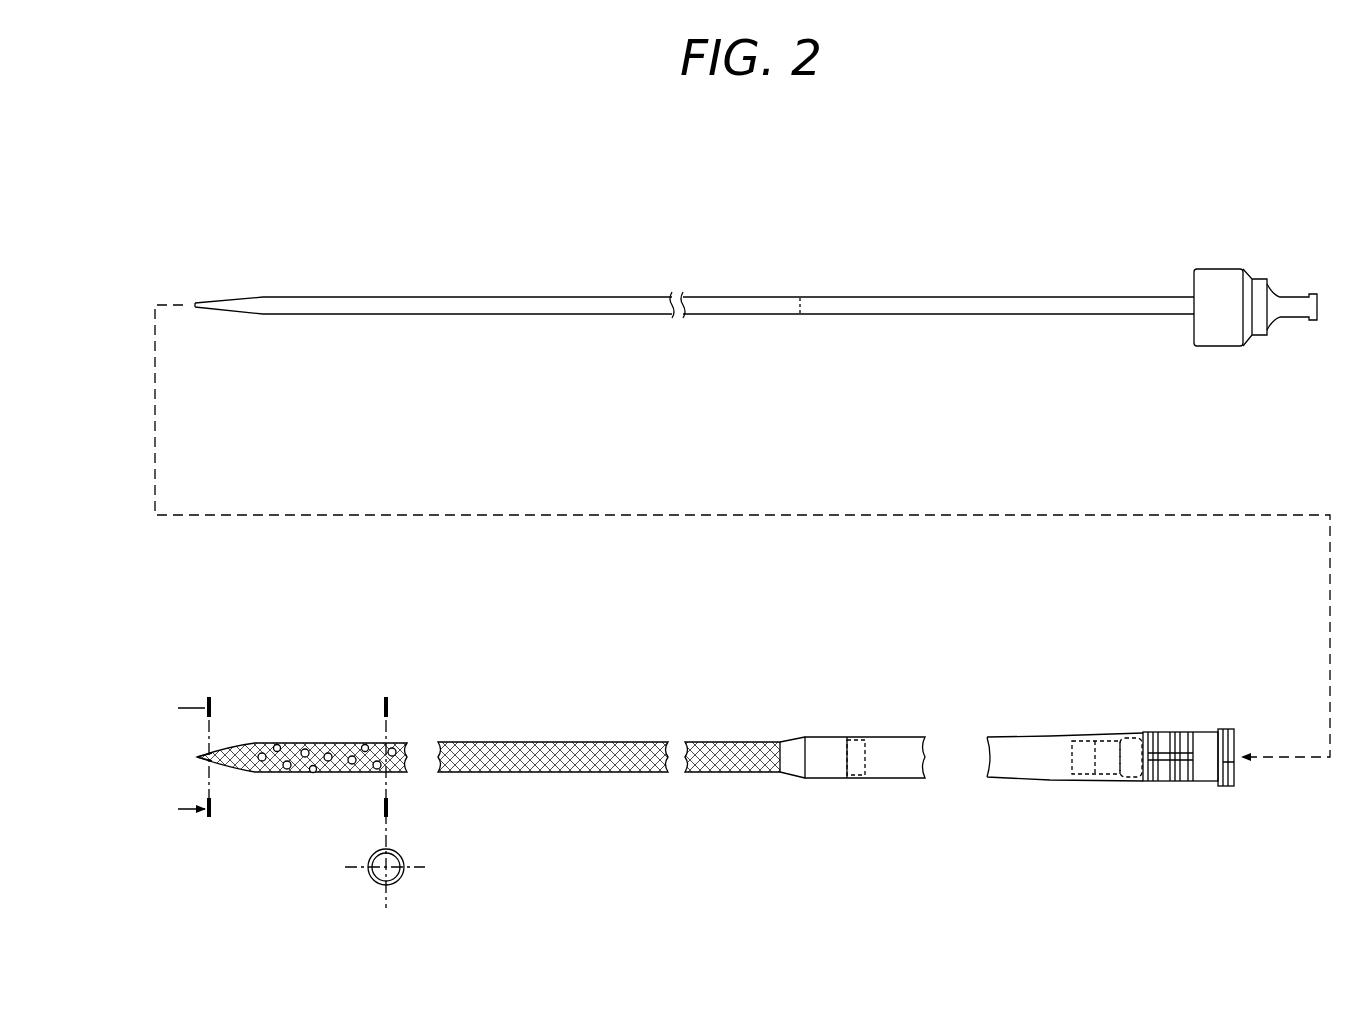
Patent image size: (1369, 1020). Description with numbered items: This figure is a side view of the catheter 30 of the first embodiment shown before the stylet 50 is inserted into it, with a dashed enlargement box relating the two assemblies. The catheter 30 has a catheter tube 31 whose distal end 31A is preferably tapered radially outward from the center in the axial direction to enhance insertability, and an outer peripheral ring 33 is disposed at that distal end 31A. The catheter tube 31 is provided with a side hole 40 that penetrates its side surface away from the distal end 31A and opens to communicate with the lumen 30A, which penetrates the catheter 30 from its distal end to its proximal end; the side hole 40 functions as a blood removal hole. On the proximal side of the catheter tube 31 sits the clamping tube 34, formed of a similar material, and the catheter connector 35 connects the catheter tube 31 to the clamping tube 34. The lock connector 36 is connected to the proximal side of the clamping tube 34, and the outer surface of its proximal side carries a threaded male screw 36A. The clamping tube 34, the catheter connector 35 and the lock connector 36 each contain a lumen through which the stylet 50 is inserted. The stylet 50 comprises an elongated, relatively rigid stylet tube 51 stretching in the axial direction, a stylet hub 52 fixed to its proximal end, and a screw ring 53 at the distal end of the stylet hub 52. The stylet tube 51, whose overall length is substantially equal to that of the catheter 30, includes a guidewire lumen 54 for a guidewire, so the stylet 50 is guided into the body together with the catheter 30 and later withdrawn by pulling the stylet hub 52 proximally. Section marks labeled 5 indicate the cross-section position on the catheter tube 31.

The stylet 50 is at (756, 311).
The stylet tube 51 is at (742, 296).
The stylet hub 52 is at (1299, 313).
The screw ring 53 is at (1219, 342).
The guidewire lumen 54 is at (825, 305).
The catheter 30 is at (725, 762).
The lumen 30A is at (1015, 762).
The catheter tube 31 is at (482, 773).
The distal end 31A is at (213, 765).
The outer peripheral ring 33 is at (302, 770).
The clamping tube 34 is at (887, 735).
The catheter connector 35 is at (795, 735).
The lock connector 36 is at (1207, 777).
The male screw 36A is at (1227, 783).
The side hole 40 is at (286, 770).
The section line for FIG. 5 is at (301, 790).